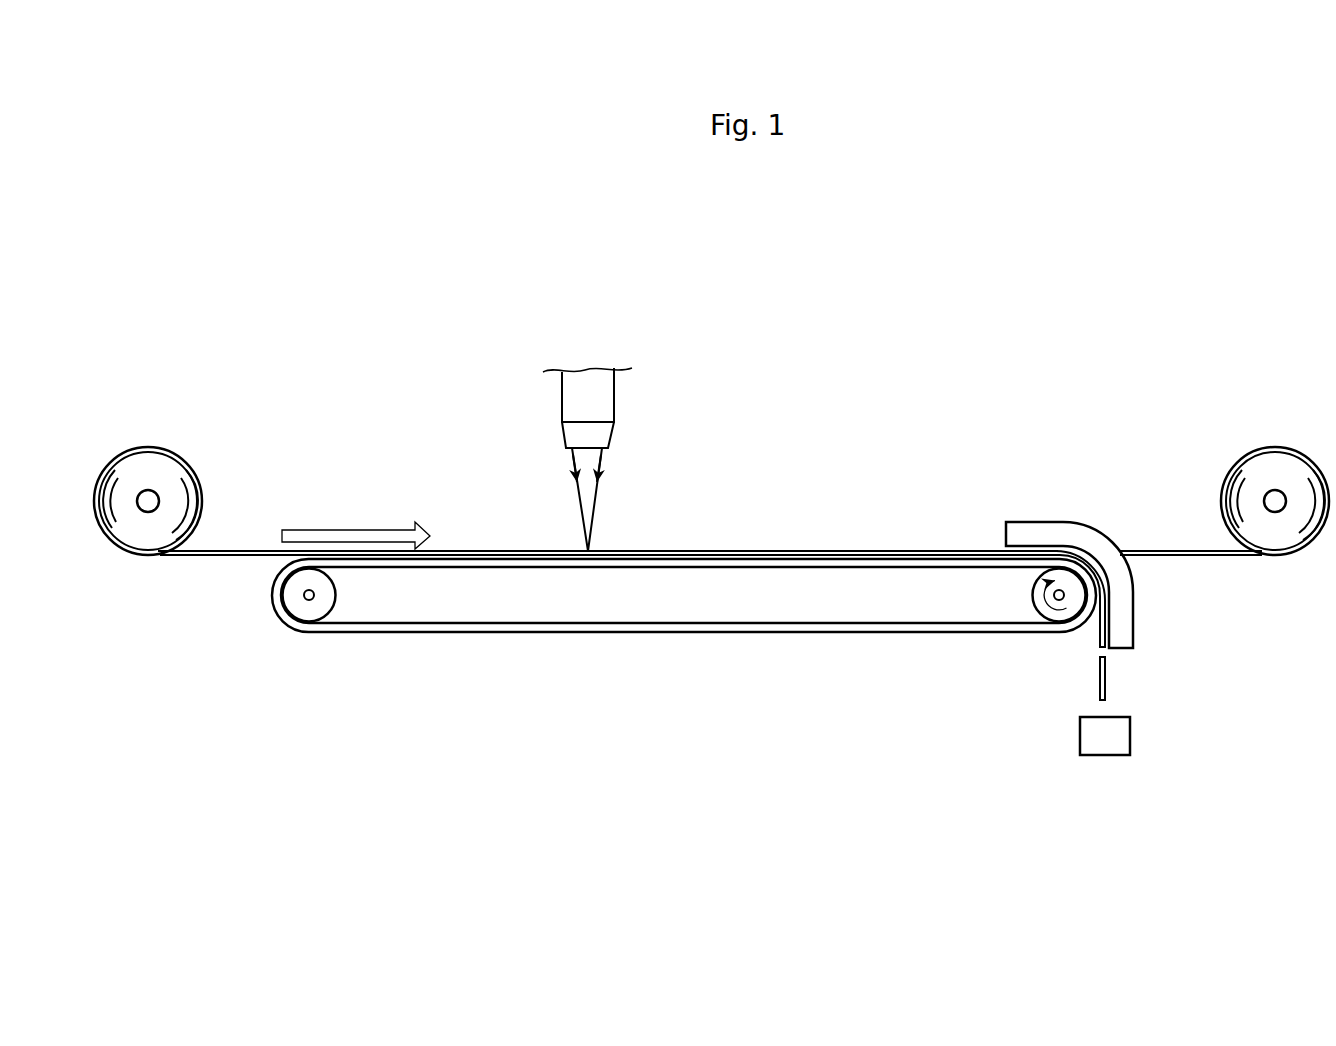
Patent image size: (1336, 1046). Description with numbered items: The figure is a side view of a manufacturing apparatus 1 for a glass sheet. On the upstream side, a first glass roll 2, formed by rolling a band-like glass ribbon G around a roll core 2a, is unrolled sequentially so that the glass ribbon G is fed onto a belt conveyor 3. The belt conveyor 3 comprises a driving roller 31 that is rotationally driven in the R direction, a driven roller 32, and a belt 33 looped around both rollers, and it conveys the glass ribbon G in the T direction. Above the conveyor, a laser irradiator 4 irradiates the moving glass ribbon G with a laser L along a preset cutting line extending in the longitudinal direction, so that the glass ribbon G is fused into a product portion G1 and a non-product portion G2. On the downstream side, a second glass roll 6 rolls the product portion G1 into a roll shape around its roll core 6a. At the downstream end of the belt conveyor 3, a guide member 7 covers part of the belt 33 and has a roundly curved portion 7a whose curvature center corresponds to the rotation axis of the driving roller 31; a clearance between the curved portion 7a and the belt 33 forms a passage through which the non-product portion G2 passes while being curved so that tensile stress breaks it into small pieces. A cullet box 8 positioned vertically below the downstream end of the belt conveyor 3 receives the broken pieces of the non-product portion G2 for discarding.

The manufacturing apparatus 1 is at (829, 371).
The first glass roll 2 is at (182, 445).
The roll core 2a is at (150, 513).
The belt conveyor 3 is at (684, 641).
The driving roller 31 is at (1033, 605).
The driven roller 32 is at (337, 602).
The belt 33 is at (575, 632).
The laser irradiator 4 is at (614, 400).
The second glass roll 6 is at (1242, 445).
The roll core 6a is at (1273, 513).
The guide member 7 is at (1069, 550).
The curved portion 7a is at (1099, 532).
The cullet box 8 is at (1130, 733).
The glass ribbon G is at (497, 548).
The product portion G1 is at (1177, 549).
The non-product portion G2 is at (1108, 680).
The laser L is at (598, 509).
The R direction R is at (1040, 583).
The T direction T is at (356, 525).